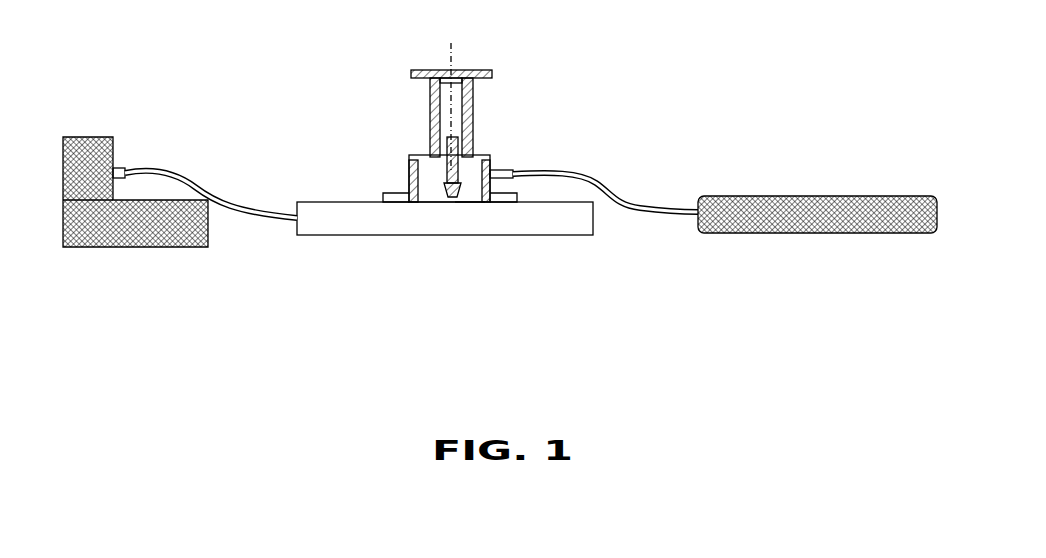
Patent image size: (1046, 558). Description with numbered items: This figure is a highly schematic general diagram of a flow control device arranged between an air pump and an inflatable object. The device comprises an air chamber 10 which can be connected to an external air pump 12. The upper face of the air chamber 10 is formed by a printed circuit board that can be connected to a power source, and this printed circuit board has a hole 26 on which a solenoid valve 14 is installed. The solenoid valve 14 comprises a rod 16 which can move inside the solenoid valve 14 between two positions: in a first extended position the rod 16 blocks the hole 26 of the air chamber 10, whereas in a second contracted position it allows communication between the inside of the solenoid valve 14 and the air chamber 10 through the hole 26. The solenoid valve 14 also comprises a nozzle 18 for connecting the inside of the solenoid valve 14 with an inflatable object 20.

The air chamber 10 is at (365, 222).
The external air pump 12 is at (97, 171).
The solenoid valve 14 is at (433, 102).
The rod 16 is at (448, 167).
The nozzle 18 is at (502, 172).
The inflatable object 20 is at (767, 214).
The hole 26 is at (468, 209).